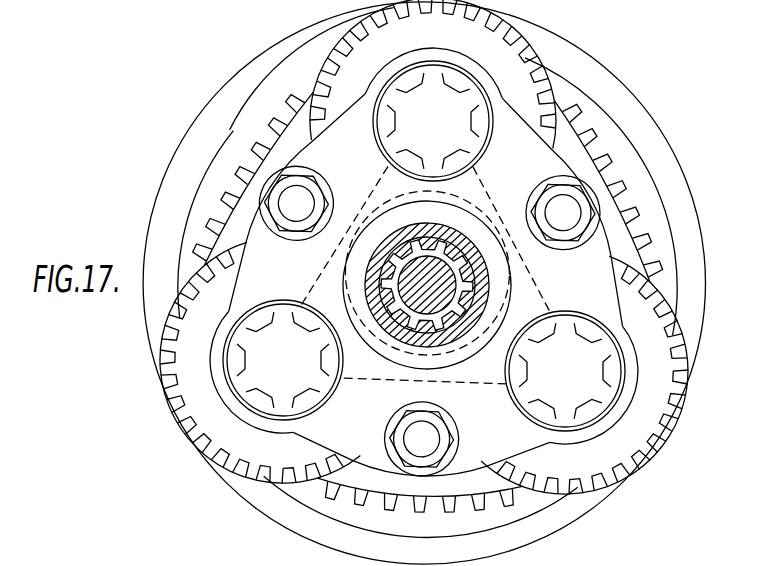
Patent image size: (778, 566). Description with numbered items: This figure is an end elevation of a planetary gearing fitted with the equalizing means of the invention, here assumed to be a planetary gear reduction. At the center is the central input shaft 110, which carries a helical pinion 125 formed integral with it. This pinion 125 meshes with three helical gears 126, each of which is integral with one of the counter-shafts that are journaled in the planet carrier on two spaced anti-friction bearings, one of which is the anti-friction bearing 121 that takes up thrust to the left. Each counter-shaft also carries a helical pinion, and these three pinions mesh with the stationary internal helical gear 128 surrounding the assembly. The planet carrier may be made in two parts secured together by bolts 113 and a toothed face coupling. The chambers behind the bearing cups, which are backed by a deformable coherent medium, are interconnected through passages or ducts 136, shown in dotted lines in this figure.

The central input shaft 110 is at (413, 279).
The bolts 113 is at (566, 222).
The anti-friction bearing 121 is at (187, 565).
The helical pinion 125 is at (460, 281).
The helical gears 126 is at (235, 560).
The stationary internal helical gear 128 is at (273, 110).
The passages or ducts 136 is at (393, 384).